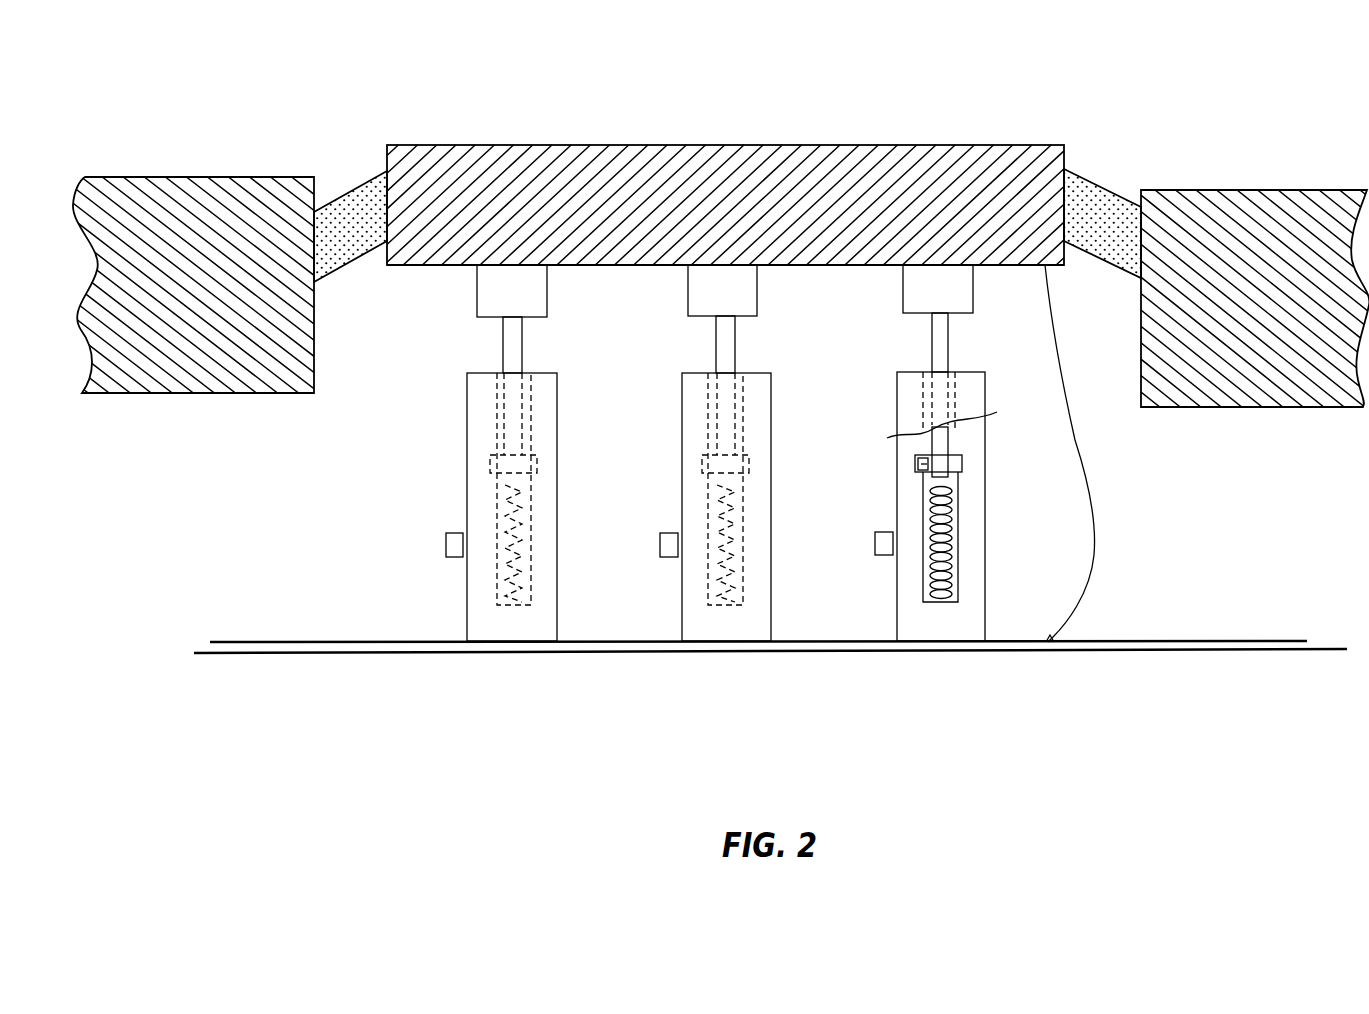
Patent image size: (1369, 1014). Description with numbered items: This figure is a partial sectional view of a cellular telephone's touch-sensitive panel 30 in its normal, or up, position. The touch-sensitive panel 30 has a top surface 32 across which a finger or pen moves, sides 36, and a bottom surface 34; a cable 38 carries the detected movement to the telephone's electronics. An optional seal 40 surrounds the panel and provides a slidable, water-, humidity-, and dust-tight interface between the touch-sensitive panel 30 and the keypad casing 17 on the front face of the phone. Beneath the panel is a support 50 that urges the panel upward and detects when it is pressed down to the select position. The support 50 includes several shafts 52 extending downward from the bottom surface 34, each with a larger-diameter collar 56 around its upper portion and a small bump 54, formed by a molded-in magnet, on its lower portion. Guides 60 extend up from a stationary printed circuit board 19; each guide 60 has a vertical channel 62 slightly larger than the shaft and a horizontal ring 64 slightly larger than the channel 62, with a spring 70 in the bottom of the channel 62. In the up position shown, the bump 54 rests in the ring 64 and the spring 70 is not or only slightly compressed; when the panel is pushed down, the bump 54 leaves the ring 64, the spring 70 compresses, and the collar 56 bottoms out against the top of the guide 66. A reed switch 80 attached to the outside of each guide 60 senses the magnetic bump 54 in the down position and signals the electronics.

The keypad casing 17 is at (160, 193).
The printed circuit board 19 is at (1230, 641).
The touch-sensitive panel 30 is at (748, 130).
The top surface 32 is at (920, 144).
The bottom surface 34 is at (421, 268).
The sides 36 is at (385, 259).
The cable 38 is at (1080, 470).
The seal 40 is at (347, 202).
The support 50 is at (630, 453).
The shaft 52 is at (715, 352).
The bump 54 is at (926, 465).
The collar 56 is at (688, 285).
The guide 60 is at (557, 425).
The channel 62 is at (923, 590).
The ring 64 is at (962, 458).
The top of the guide 66 is at (937, 495).
The spring 70 is at (947, 577).
The switch 80 is at (445, 543).